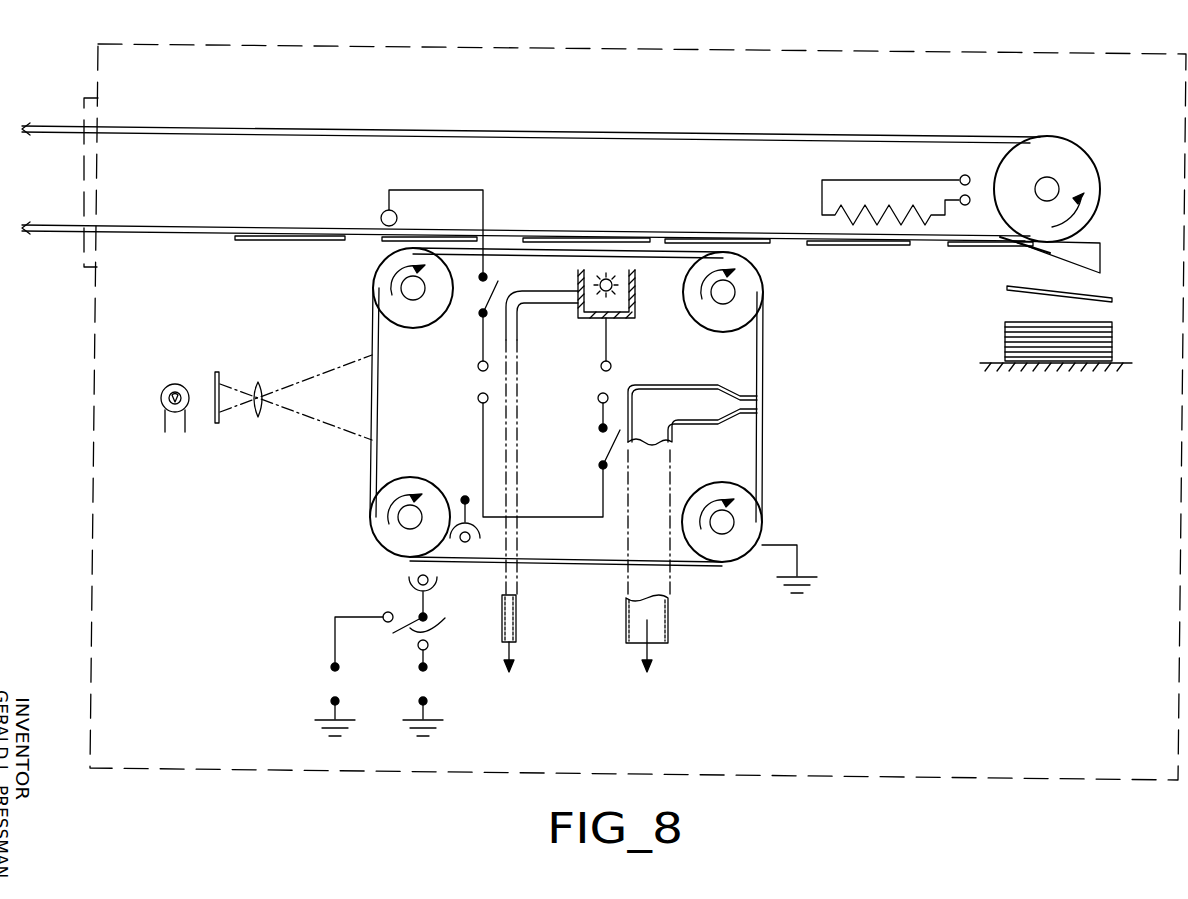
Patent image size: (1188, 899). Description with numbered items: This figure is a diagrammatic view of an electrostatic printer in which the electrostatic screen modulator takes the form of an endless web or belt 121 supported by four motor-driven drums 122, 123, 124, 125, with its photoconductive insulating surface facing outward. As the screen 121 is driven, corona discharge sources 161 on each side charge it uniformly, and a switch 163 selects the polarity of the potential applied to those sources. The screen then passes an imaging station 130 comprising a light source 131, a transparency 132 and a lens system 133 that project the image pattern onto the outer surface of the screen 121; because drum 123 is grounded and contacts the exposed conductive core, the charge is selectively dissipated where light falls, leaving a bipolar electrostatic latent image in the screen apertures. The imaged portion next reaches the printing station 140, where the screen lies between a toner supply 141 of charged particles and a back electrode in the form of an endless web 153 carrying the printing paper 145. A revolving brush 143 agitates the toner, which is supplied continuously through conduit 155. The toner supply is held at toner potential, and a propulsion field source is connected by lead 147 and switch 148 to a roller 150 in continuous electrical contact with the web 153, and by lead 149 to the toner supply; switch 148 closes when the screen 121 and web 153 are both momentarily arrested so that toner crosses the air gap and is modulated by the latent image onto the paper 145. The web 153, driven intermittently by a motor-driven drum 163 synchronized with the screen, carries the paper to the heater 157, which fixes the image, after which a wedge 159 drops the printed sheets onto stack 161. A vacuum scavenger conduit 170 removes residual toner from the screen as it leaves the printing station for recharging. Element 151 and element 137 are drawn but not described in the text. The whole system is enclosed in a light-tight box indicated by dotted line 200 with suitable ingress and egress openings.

The light tight box 200 is at (282, 40).
The endless web 153 is at (470, 129).
The motor driven drum 163 is at (1075, 152).
The heater 157 is at (892, 214).
The wedge 159 is at (1100, 271).
The stack 161 is at (1113, 342).
The contact bracket 151 is at (371, 213).
The roller 150 is at (397, 213).
The endless web or belt screen 121 is at (505, 250).
The printing paper 145 is at (657, 239).
The motor-driven drum 125 is at (376, 272).
The motor-driven drum 122 is at (757, 307).
The motor-driven drum 123 is at (750, 520).
The motor-driven drum 124 is at (397, 552).
The printing station 140 is at (675, 281).
The revolving brush 143 is at (598, 285).
The toner supply 141 is at (627, 313).
The conduit 155 is at (500, 628).
The vacuum scavenger conduit 170 is at (698, 388).
The switch 148 is at (480, 304).
The lead 147 is at (477, 364).
The lead 149 is at (481, 441).
The charging electrode 137 is at (466, 541).
The imaging station 130 is at (287, 462).
The light source 131 is at (176, 383).
The transparency 132 is at (217, 372).
The lens system 133 is at (261, 384).